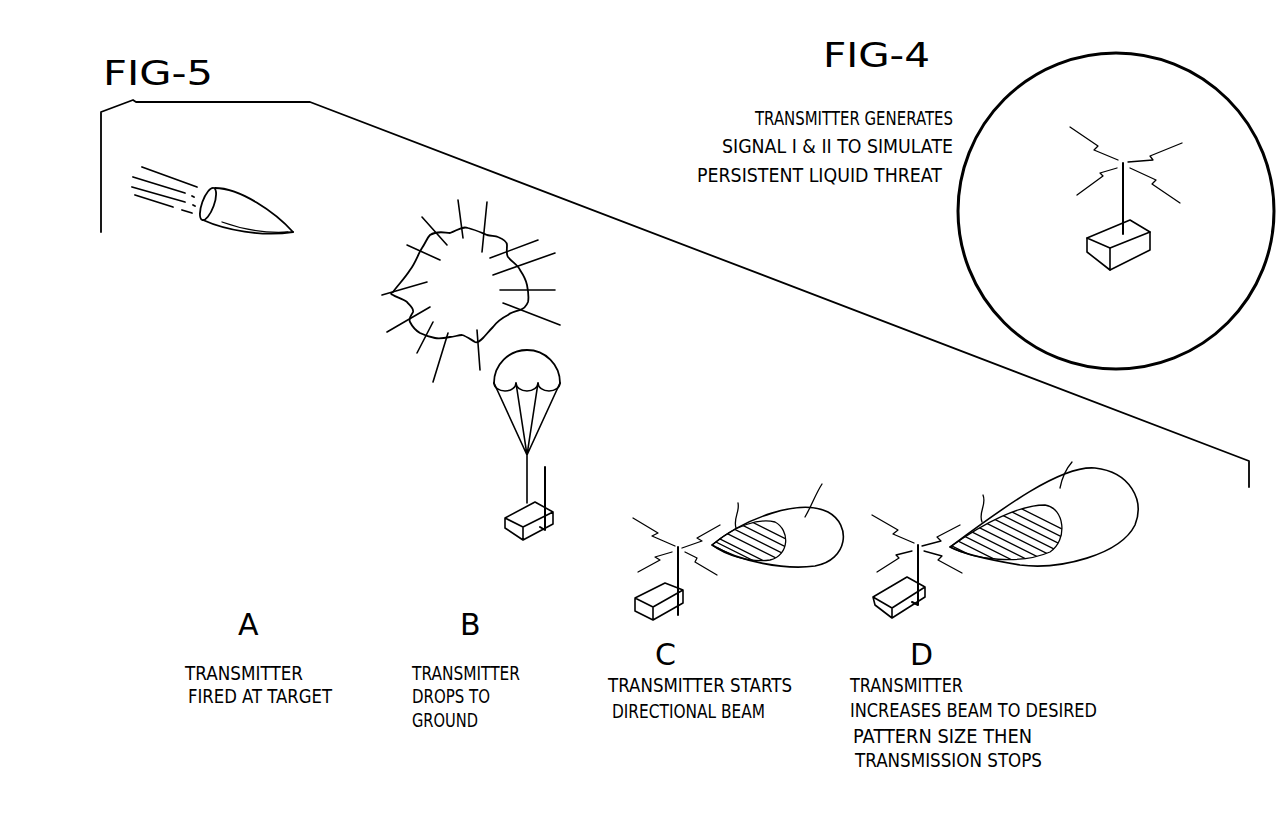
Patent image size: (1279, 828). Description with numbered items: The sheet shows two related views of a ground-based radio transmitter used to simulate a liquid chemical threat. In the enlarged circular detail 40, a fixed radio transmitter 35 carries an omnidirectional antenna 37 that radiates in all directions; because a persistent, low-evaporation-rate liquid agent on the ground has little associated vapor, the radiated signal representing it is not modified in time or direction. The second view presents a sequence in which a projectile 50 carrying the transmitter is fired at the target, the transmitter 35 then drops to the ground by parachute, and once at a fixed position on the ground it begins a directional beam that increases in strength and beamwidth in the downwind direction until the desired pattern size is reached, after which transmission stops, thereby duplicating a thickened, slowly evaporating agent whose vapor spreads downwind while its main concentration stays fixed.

In FIG. 4, the transmitter 35 is at (1125, 255).
In FIG. 4, the antenna 37 is at (1120, 200).
In FIG. 4, the enlarged transmitter detail 40 is at (958, 238).
In FIG. 5, the projectile 50 is at (240, 222).